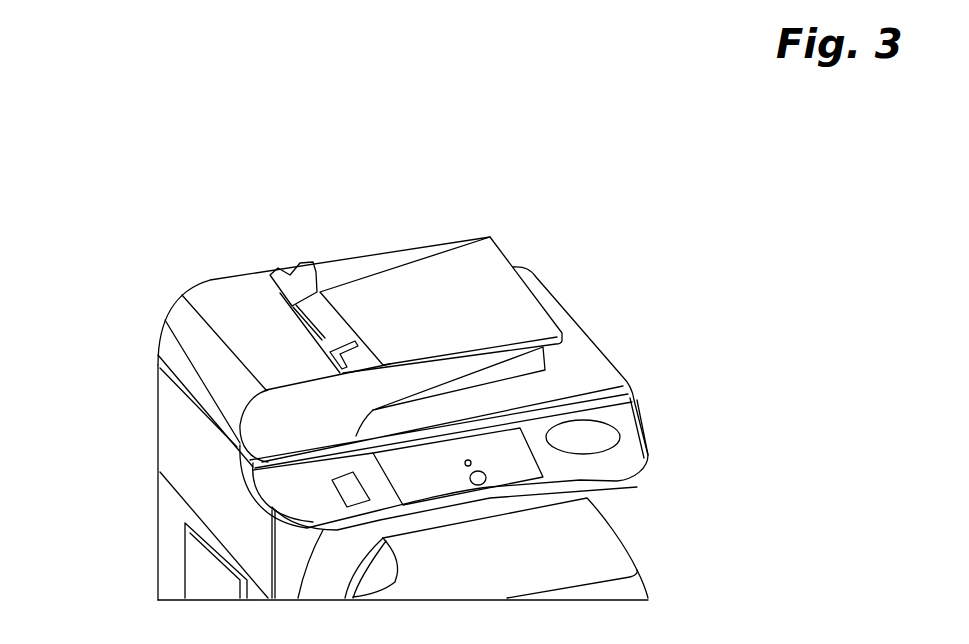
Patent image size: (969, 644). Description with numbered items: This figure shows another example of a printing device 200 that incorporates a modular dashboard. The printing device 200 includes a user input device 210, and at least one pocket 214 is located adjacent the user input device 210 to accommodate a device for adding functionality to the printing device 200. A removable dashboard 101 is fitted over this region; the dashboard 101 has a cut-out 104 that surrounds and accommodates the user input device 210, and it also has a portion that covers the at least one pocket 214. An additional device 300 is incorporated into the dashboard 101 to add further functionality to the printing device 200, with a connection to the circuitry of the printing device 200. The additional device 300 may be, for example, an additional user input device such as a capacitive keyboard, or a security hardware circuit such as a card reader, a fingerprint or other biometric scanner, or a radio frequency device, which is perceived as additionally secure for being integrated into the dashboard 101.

The printing device 200 is at (198, 212).
The pocket 214 is at (262, 462).
The dashboard 101 is at (630, 423).
The cut-out 104 is at (540, 460).
The user input device 210 is at (495, 470).
The additional device 300 is at (607, 425).